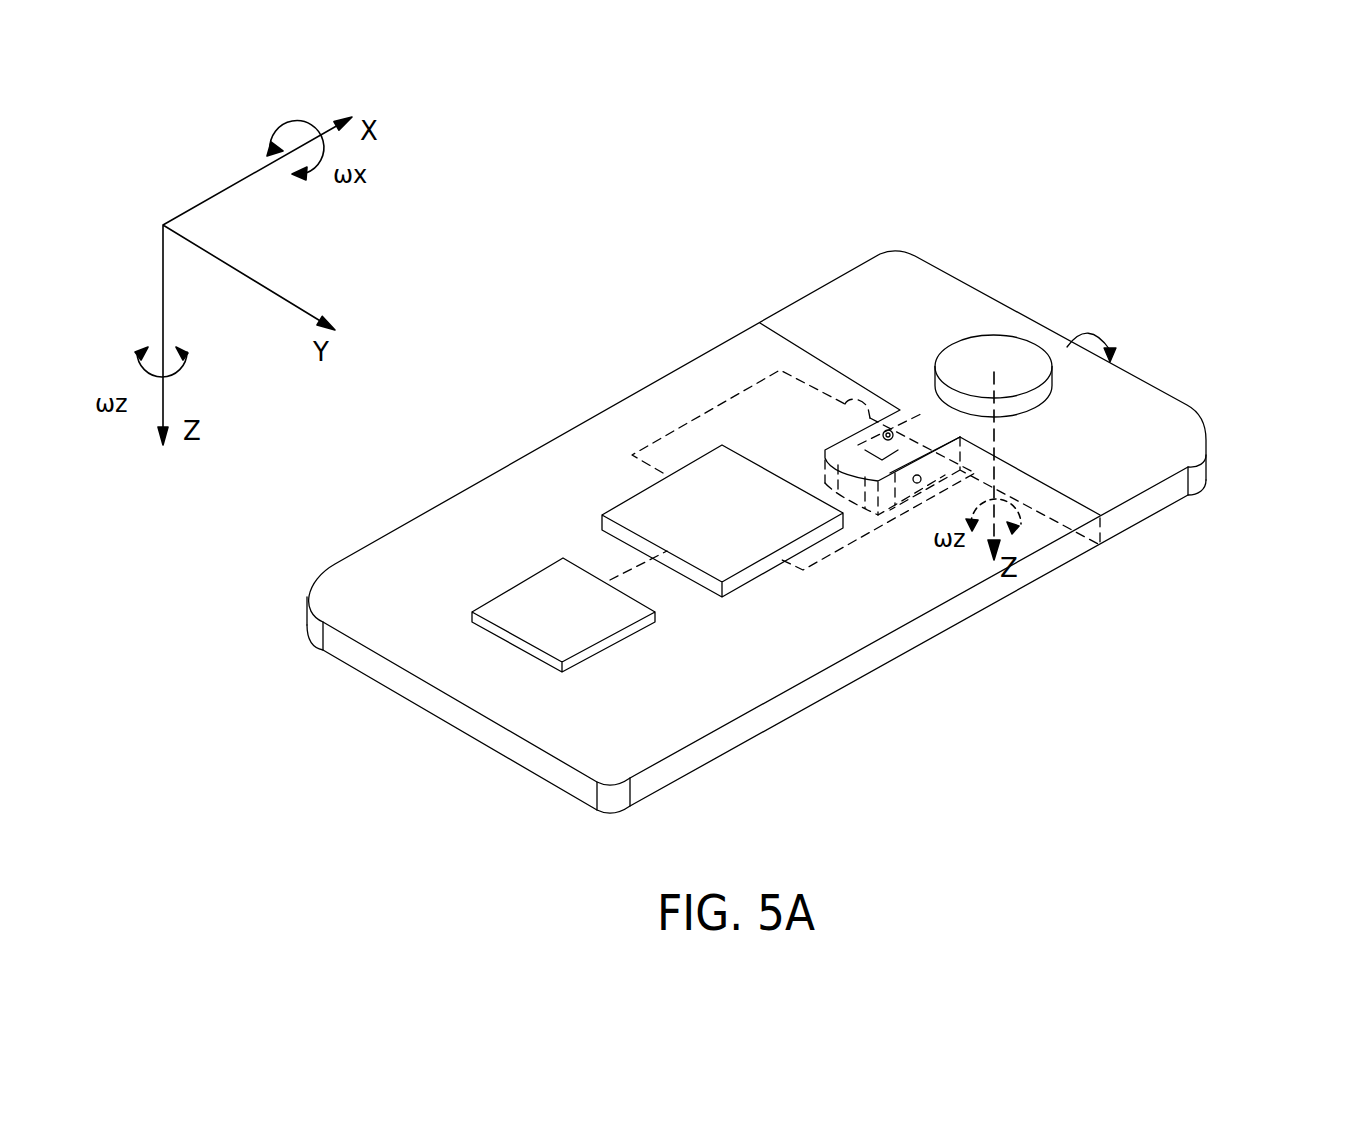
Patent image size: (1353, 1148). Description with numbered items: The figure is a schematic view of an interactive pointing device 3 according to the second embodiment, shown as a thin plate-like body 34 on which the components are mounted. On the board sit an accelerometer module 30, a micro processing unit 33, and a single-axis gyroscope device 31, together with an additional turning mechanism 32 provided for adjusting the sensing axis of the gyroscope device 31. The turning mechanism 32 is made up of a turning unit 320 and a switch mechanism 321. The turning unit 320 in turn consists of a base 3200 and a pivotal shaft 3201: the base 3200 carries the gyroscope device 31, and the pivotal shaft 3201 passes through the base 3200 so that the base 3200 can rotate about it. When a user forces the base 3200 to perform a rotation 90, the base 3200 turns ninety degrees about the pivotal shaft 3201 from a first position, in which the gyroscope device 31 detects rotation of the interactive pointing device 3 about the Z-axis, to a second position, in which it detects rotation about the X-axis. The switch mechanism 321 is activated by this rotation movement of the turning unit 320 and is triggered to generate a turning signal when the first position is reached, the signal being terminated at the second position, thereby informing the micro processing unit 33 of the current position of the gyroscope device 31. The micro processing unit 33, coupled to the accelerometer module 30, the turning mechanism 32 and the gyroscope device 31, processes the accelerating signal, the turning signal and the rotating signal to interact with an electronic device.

The interactive pointing device 3 is at (789, 255).
The accelerometer module 30 is at (590, 618).
The gyroscope device 31 is at (1008, 358).
The turning mechanism 32 is at (1089, 586).
The turning unit 320 is at (1101, 544).
The base 3200 is at (1098, 437).
The pivotal shaft 3201 is at (921, 477).
The switch mechanism 321 is at (900, 462).
The micro processing unit 33 is at (722, 545).
The substrate 34 is at (548, 478).
The rotation 90 is at (1112, 334).